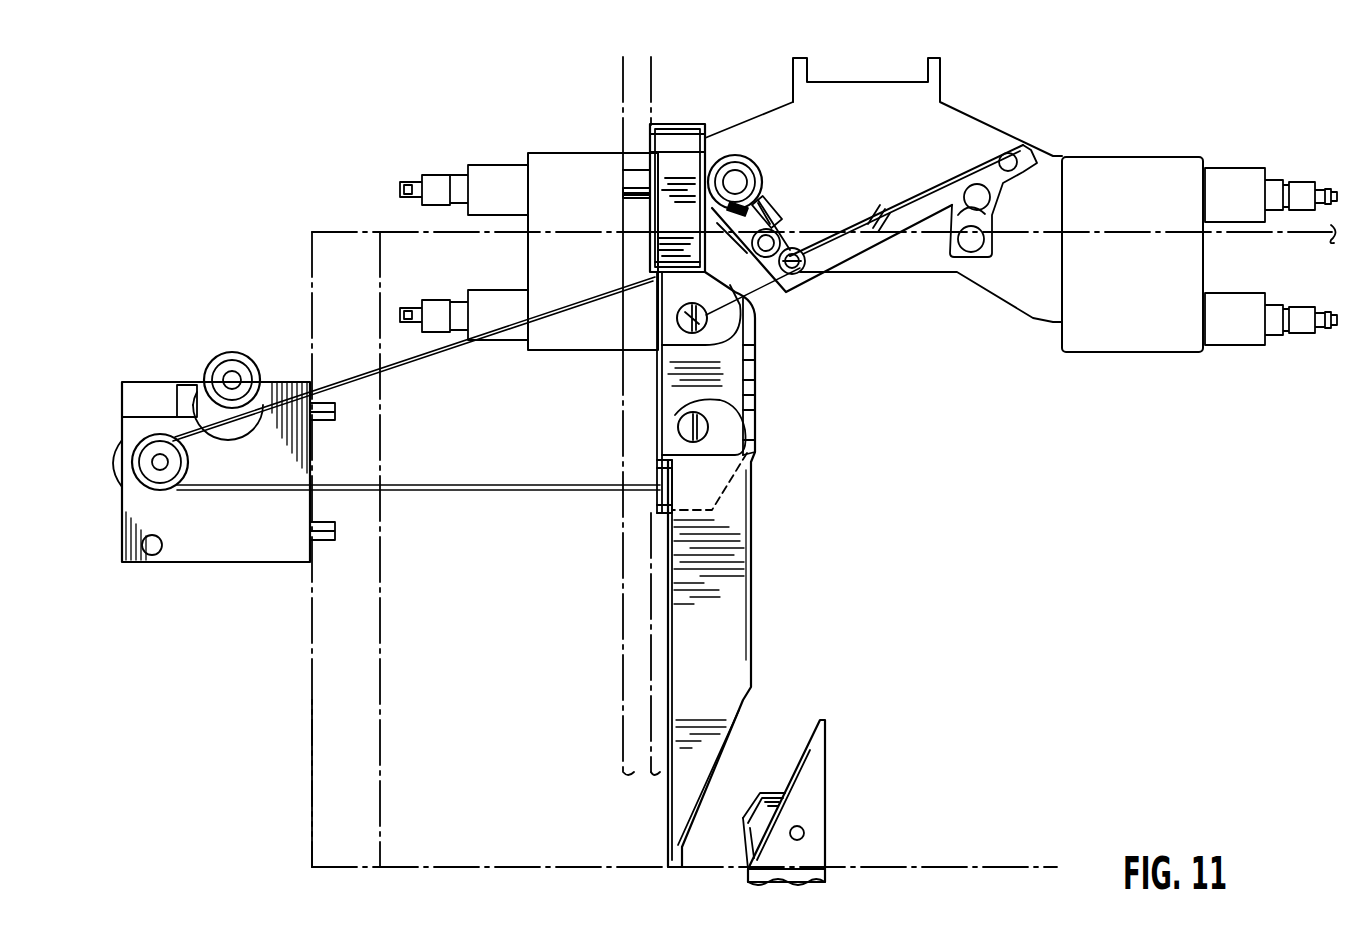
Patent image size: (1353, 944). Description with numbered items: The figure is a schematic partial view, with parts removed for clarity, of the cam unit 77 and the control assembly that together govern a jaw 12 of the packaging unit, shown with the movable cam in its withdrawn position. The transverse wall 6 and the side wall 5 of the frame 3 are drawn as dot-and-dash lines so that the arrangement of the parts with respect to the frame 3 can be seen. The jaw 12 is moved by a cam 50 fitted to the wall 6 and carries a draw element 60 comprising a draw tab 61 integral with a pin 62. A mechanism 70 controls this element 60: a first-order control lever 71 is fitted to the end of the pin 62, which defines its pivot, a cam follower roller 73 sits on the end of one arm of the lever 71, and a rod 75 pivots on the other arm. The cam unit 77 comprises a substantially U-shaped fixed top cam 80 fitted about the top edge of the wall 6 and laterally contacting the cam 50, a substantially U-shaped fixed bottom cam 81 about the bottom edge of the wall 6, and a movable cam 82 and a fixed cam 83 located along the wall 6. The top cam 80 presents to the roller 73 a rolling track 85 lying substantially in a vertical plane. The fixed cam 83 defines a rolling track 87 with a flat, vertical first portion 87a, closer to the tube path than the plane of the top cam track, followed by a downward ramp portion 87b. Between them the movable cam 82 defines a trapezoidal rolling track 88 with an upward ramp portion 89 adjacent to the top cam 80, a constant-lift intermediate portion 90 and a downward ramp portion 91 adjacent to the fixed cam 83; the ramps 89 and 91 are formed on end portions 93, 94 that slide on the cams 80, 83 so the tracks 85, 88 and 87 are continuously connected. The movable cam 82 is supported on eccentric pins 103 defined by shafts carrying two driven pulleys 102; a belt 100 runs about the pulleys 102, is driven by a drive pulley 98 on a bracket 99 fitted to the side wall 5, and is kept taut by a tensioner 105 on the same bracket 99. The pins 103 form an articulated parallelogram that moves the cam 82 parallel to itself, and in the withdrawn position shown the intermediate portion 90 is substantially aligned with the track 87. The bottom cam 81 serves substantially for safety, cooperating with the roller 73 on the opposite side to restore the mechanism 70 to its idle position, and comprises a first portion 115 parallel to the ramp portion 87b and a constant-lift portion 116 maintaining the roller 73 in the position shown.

The frame 3 is at (309, 720).
The side wall 5 is at (327, 260).
The transverse wall 6 is at (480, 850).
The jaw 12 is at (963, 108).
The cam 50 is at (632, 92).
The element 60 is at (650, 208).
The draw tab 61 is at (750, 212).
The pin 62 is at (806, 261).
The mechanism 70 is at (899, 247).
The first-order control lever 71 is at (765, 203).
The cam follower roller 73 is at (740, 156).
The rod 75 is at (907, 212).
The cam unit 77 is at (781, 525).
The fixed top cam 80 is at (677, 170).
The fixed bottom cam 81 is at (811, 797).
The movable cam 82 is at (731, 393).
The fixed cam 83 is at (738, 603).
The rolling track 85 is at (709, 151).
The rolling track 87 is at (757, 647).
The first portion 87a is at (752, 568).
The downward ramp portion 87b is at (746, 708).
The rolling track 88 is at (753, 357).
The upward ramp portion 89 is at (726, 247).
The constant-lift intermediate portion 90 is at (754, 445).
The downward ramp portion 91 is at (753, 488).
The end portion 93 is at (655, 278).
The end portion 94 is at (666, 499).
The drive pulley 98 is at (143, 483).
The bracket 99 is at (218, 548).
The belt 100 is at (455, 492).
The driven pulley 102 is at (678, 322).
The eccentric pin 103 is at (708, 320).
The tensioner 105 is at (244, 360).
The first portion 115 is at (787, 781).
The constant-lift portion 116 is at (741, 834).